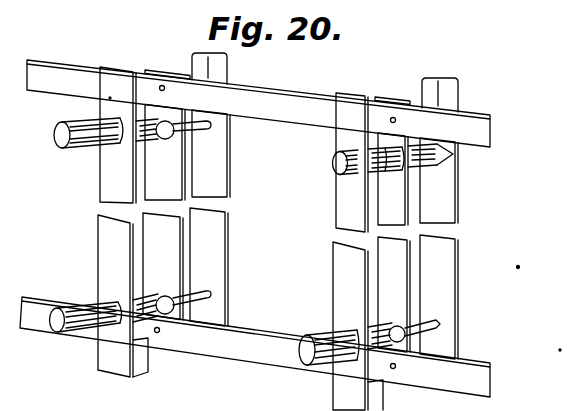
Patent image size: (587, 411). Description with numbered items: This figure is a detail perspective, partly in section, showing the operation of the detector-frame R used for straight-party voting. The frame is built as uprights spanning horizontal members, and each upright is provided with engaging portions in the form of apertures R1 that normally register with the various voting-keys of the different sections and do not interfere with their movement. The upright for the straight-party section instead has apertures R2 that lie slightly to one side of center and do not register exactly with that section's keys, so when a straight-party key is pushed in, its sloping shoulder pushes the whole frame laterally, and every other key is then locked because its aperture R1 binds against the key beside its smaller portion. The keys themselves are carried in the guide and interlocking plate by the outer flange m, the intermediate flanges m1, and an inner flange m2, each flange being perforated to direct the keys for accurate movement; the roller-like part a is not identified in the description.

The detector-frame R is at (394, 294).
The apertures R1 is at (214, 141).
The apertures R2 is at (403, 341).
The outer flange m is at (240, 312).
The intermediate flanges m1 is at (183, 235).
The inner flange m2 is at (440, 132).
The roller a is at (82, 306).